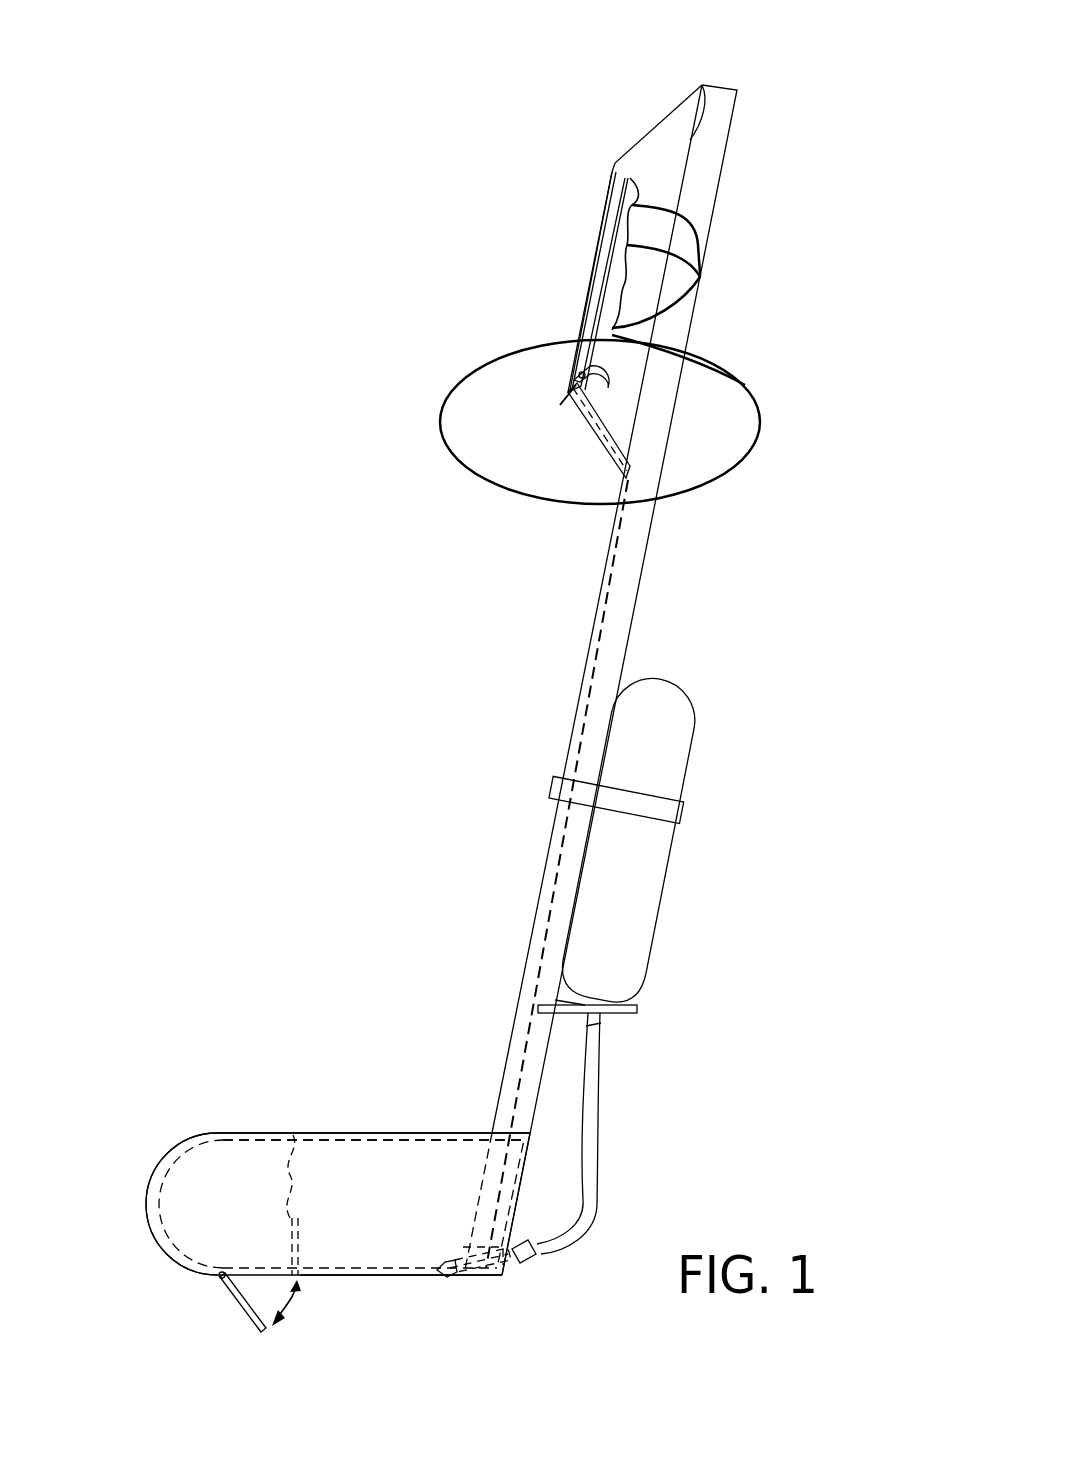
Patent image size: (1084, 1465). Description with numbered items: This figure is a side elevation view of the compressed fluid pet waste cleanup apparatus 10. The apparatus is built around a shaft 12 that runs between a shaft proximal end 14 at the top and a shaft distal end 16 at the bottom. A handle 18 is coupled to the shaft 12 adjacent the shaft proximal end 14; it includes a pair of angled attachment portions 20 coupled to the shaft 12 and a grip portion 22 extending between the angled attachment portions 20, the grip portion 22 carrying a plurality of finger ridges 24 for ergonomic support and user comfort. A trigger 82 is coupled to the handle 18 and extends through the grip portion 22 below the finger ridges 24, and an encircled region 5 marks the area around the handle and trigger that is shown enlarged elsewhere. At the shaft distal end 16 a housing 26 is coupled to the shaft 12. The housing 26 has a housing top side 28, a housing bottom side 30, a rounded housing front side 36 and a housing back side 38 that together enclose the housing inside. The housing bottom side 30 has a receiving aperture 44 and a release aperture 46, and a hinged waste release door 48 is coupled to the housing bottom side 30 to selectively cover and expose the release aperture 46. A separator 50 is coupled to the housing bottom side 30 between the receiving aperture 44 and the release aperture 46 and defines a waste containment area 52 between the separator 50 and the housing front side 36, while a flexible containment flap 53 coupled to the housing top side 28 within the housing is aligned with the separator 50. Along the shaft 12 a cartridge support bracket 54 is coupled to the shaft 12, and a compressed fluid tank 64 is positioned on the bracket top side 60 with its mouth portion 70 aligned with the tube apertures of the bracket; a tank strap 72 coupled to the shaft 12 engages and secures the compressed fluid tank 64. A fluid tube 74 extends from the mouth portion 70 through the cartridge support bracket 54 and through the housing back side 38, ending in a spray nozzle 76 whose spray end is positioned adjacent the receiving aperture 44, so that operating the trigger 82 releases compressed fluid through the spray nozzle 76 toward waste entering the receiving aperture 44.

The compressed fluid pet waste cleanup apparatus 10 is at (872, 212).
The shaft 12 is at (645, 600).
The shaft proximal end 14 is at (722, 88).
The shaft distal end 16 is at (518, 1228).
The handle 18 is at (608, 181).
The angled attachment portions 20 is at (663, 137).
The grip portion 22 is at (594, 262).
The finger ridges 24 is at (700, 277).
The housing 26 is at (350, 1133).
The housing top side 28 is at (425, 1133).
The housing bottom side 30 is at (487, 1277).
The housing front side 36 is at (148, 1200).
The housing back side 38 is at (528, 1151).
The receiving aperture 44 is at (392, 1278).
The release aperture 46 is at (297, 1288).
The hinged waste release door 48 is at (240, 1306).
The separator 50 is at (298, 1236).
The waste containment area 52 is at (190, 1236).
The flexible containment flap 53 is at (290, 1180).
The cartridge support bracket 54 is at (632, 1015).
The bracket top side 60 is at (567, 1001).
The compressed fluid tank 64 is at (622, 883).
The mouth portion 70 is at (603, 1024).
The tank strap 72 is at (658, 808).
The fluid tube 74 is at (590, 1141).
The spray nozzle 76 is at (448, 1276).
The trigger 82 is at (585, 385).
The detail region 5 is at (760, 420).